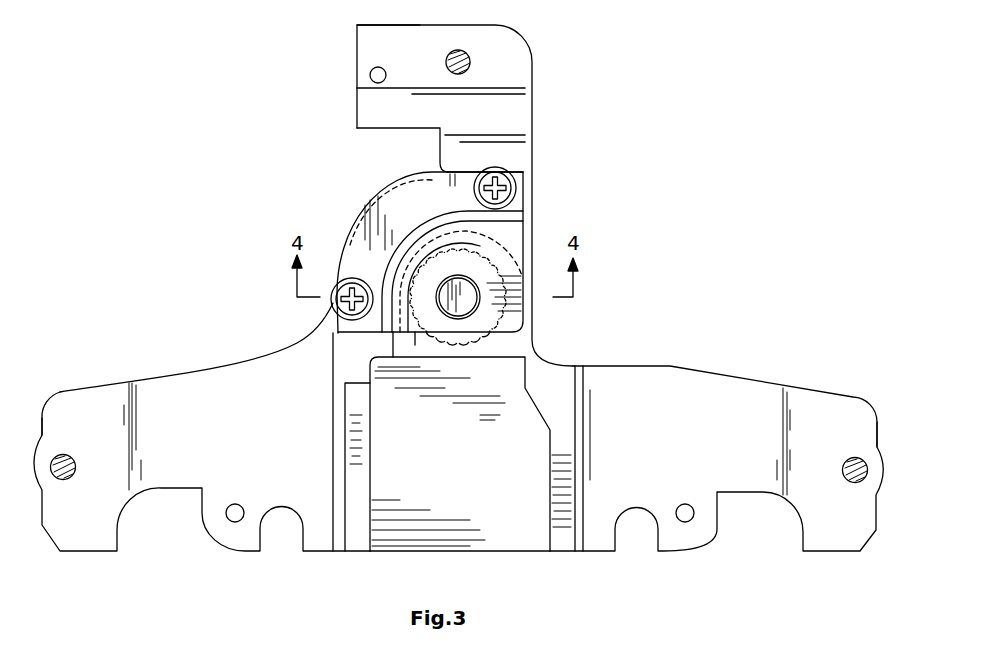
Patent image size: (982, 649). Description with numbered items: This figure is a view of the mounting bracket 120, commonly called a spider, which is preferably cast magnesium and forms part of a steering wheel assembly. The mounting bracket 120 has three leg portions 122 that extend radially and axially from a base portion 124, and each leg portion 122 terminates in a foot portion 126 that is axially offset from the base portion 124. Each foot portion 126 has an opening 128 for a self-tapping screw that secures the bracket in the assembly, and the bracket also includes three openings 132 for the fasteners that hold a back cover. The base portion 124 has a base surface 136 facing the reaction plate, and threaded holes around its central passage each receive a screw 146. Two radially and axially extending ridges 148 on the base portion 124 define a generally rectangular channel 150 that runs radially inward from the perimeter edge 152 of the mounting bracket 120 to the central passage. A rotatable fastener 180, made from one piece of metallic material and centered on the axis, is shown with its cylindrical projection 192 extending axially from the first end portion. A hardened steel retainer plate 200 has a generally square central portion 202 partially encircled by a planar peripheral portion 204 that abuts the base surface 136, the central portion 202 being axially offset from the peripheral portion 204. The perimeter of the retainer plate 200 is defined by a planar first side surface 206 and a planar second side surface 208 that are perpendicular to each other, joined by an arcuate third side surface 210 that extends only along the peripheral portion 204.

The mounting bracket 120 is at (533, 90).
The leg portions 122 is at (267, 392).
The base portion 124 is at (355, 204).
The foot portion 126 is at (413, 43).
The opening 128 is at (472, 62).
The openings 132 is at (370, 75).
The base surface 136 is at (352, 352).
The screw 146 is at (510, 190).
The ridges 148 is at (370, 523).
The channel 150 is at (510, 522).
The perimeter edge 152 is at (417, 558).
The rotatable fastener 180 is at (478, 345).
The cylindrical projection 192 is at (470, 300).
The retainer plate 200 is at (375, 195).
The central portion 202 is at (503, 327).
The peripheral portion 204 is at (525, 206).
The first side surface 206 is at (416, 338).
The second side surface 208 is at (527, 240).
The third side surface 210 is at (418, 173).